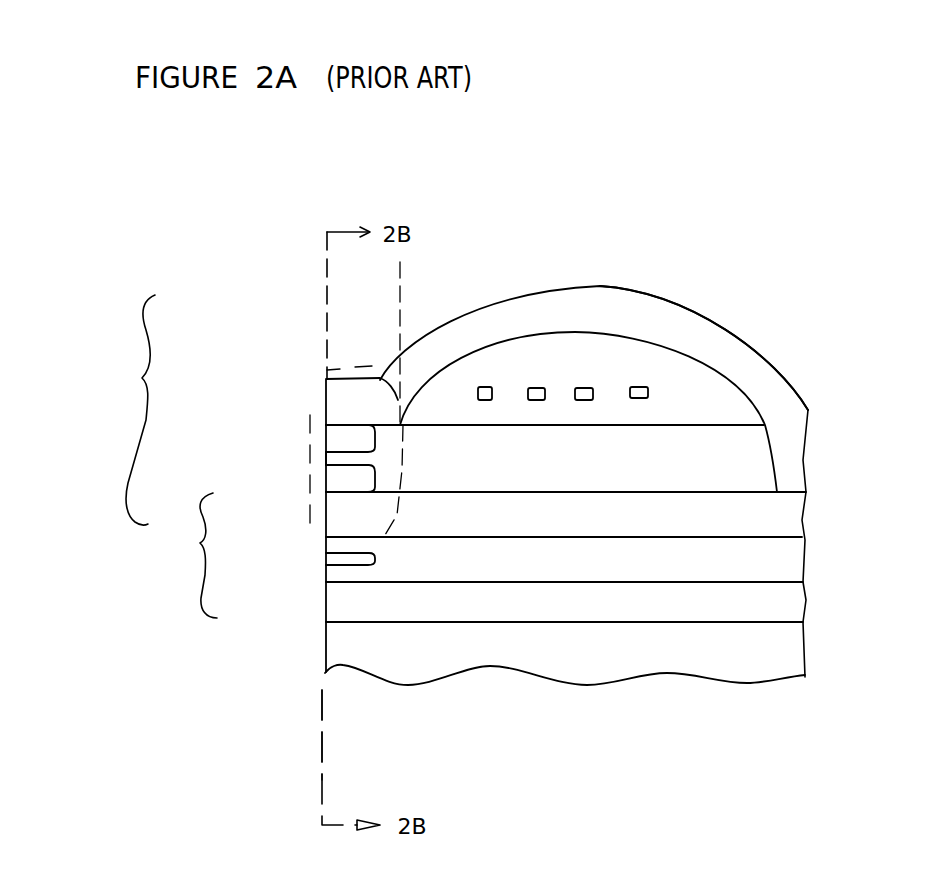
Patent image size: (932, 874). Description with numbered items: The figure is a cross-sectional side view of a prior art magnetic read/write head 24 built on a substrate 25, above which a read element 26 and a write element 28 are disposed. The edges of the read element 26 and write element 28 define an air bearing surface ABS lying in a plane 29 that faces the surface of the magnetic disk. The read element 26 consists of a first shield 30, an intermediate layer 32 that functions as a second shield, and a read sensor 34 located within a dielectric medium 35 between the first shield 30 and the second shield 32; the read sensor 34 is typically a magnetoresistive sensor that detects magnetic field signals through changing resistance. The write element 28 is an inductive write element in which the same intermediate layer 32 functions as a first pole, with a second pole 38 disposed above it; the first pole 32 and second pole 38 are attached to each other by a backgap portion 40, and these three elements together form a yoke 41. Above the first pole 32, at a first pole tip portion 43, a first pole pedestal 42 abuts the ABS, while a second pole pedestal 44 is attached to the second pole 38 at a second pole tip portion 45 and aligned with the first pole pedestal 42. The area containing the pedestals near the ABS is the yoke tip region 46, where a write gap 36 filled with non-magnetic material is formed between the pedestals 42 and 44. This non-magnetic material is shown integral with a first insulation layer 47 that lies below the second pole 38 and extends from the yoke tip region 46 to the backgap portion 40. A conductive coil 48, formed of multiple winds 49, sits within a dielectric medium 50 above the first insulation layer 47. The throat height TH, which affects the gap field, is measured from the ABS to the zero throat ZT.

The magnetic read/write head 24 is at (787, 210).
The substrate 25 is at (770, 664).
The read element 26 is at (190, 555).
The write element 28 is at (129, 410).
The plane 29 is at (320, 763).
The first shield 30 is at (795, 604).
The intermediate layer 32 is at (792, 522).
The read sensor 34 is at (325, 557).
The dielectric medium 35 is at (714, 572).
The write gap 36 is at (316, 467).
The second pole 38 is at (682, 320).
The backgap portion 40 is at (795, 458).
The yoke 41 is at (800, 378).
The first pole pedestal 42 is at (368, 482).
The first pole tip portion 43 is at (364, 531).
The second pole pedestal 44 is at (378, 440).
The second pole tip portion 45 is at (364, 416).
The yoke tip region 46 is at (313, 397).
The first insulation layer 47 is at (720, 477).
The conductive coil 48 is at (665, 392).
The winds 49 is at (535, 388).
The dielectric medium 50 is at (648, 368).
The air bearing surface ABS is at (326, 612).
The throat height TH is at (330, 298).
The zero throat ZT is at (396, 262).